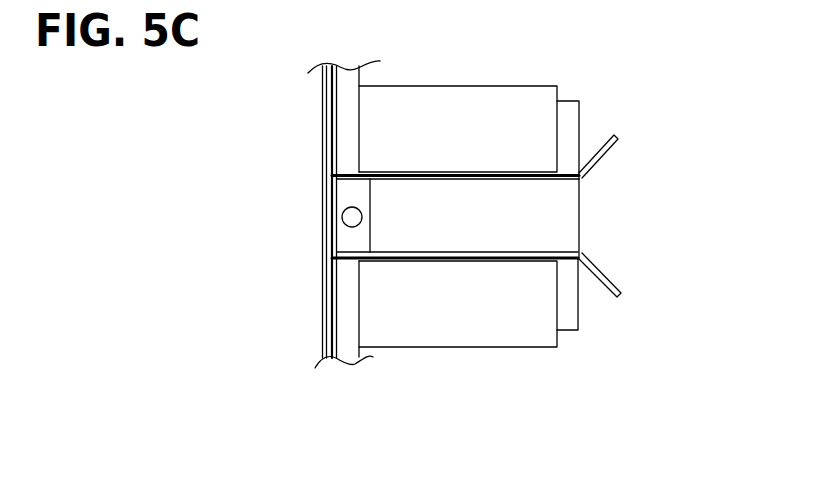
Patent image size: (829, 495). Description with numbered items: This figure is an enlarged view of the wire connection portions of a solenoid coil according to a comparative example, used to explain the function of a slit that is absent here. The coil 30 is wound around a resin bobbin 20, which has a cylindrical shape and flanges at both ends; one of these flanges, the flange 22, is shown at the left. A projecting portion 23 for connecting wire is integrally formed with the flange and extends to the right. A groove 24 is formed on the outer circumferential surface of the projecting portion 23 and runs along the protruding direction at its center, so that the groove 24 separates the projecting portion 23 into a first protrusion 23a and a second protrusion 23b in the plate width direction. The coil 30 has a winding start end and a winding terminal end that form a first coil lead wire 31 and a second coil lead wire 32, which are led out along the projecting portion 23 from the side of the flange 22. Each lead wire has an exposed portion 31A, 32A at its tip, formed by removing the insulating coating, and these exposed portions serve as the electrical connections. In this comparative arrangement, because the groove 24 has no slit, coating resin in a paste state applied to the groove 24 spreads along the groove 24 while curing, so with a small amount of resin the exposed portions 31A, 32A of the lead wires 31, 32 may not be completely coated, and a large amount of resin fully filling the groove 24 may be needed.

The bobbin 20 is at (344, 360).
The flange 22 is at (348, 72).
The coil 30 is at (323, 68).
The first coil lead wire 31 is at (418, 177).
The exposed portion 31A is at (510, 177).
The second coil lead wire 32 is at (418, 257).
The exposed portion 32A is at (512, 255).
The groove 24 is at (462, 216).
The projecting portion 23 is at (645, 221).
The first protrusion 23a is at (543, 128).
The second protrusion 23b is at (622, 303).